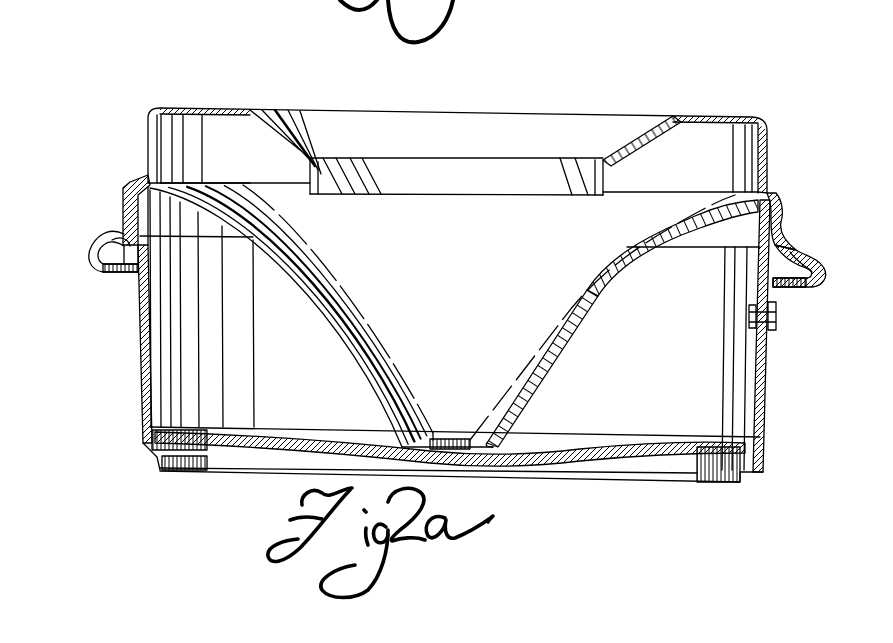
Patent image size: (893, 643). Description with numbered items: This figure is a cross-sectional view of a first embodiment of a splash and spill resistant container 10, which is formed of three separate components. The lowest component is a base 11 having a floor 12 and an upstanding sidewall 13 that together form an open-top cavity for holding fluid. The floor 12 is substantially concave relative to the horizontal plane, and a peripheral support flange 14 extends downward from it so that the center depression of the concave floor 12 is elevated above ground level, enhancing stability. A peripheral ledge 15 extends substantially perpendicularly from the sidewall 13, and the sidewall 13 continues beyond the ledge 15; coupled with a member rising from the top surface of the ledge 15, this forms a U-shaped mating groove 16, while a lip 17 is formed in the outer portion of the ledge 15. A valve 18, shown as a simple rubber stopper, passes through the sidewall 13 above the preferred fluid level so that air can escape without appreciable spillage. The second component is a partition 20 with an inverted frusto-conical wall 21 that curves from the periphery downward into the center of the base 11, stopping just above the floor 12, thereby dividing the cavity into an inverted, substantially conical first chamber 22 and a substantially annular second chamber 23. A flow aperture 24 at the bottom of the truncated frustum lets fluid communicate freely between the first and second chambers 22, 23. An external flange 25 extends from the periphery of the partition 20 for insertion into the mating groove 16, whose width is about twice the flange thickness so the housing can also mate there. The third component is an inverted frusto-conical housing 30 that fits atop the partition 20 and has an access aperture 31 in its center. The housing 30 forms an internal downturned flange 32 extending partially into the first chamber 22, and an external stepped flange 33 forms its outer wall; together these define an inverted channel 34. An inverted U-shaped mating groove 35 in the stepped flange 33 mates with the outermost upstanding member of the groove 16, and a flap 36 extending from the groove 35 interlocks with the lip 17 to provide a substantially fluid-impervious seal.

The splash and spill resistant container 10 is at (564, 82).
The base 11 is at (767, 428).
The floor 12 is at (570, 452).
The upstanding sidewall 13 is at (143, 343).
The peripheral support flange 14 is at (740, 483).
The peripheral ledge 15 is at (137, 272).
The U-shaped mating groove 16 is at (110, 244).
The lip 17 is at (105, 268).
The valve 18 is at (762, 322).
The partition 20 is at (360, 383).
The inverted frusto-conical wall 21 is at (317, 313).
The first chamber 22 is at (563, 258).
The second chamber 23 is at (612, 412).
The flow aperture 24 is at (452, 440).
The external flange 25 is at (128, 183).
The inverted frusto-conical housing 30 is at (768, 137).
The access aperture 31 is at (445, 188).
The internal downturned flange 32 is at (617, 173).
The external stepped flange 33 is at (770, 187).
The inverted channel 34 is at (237, 153).
The inverted U-shaped mating groove 35 is at (803, 262).
The flap 36 is at (818, 277).